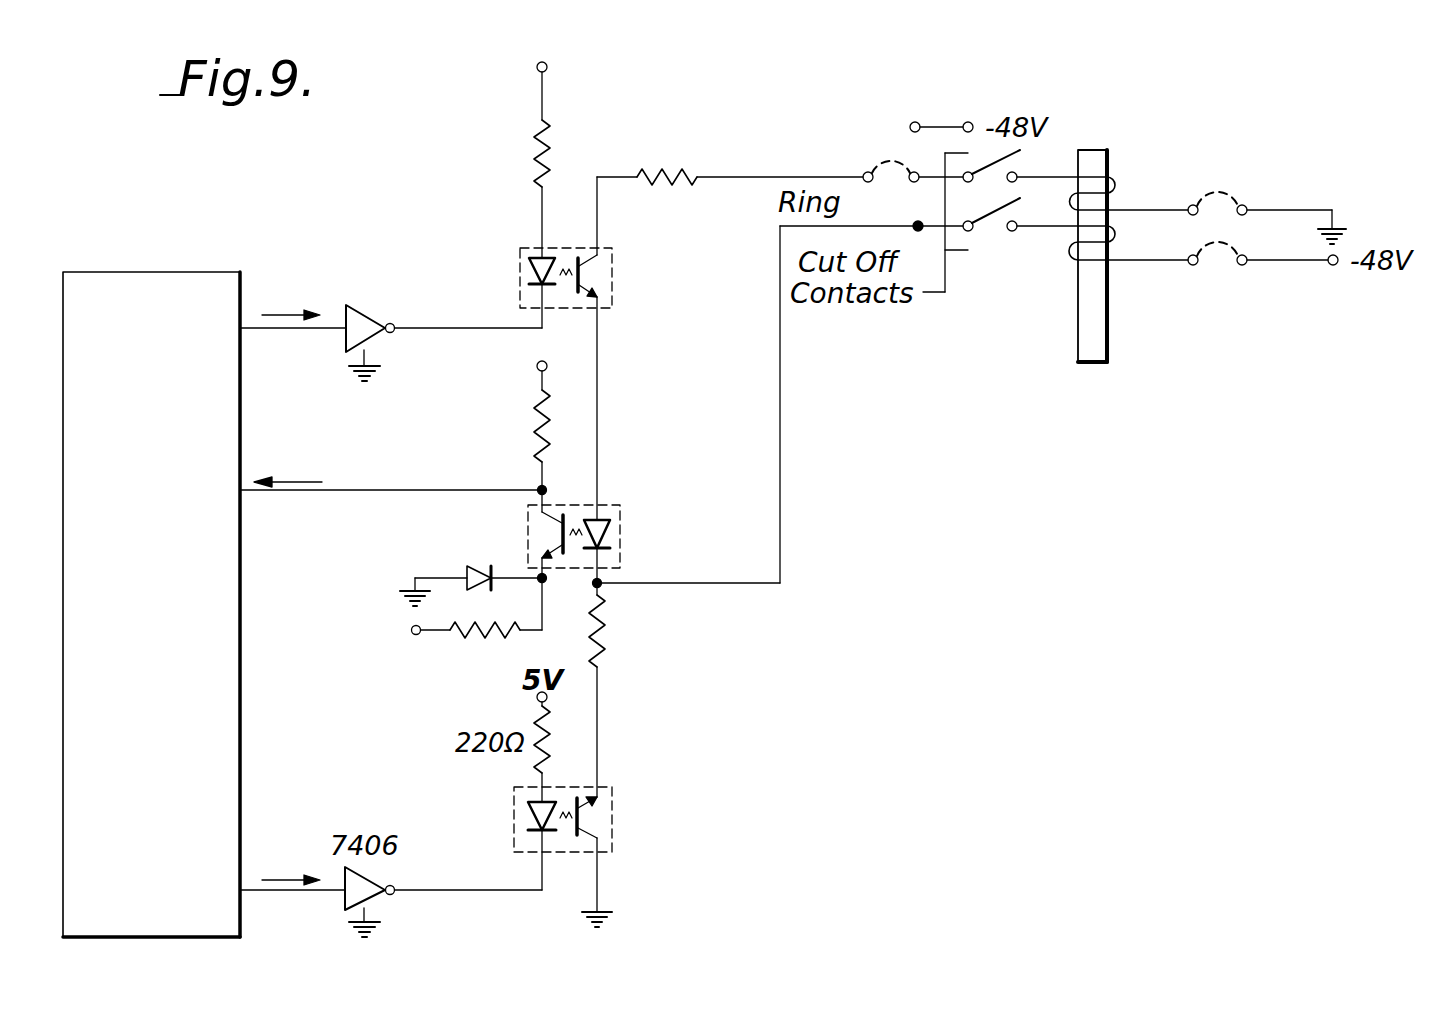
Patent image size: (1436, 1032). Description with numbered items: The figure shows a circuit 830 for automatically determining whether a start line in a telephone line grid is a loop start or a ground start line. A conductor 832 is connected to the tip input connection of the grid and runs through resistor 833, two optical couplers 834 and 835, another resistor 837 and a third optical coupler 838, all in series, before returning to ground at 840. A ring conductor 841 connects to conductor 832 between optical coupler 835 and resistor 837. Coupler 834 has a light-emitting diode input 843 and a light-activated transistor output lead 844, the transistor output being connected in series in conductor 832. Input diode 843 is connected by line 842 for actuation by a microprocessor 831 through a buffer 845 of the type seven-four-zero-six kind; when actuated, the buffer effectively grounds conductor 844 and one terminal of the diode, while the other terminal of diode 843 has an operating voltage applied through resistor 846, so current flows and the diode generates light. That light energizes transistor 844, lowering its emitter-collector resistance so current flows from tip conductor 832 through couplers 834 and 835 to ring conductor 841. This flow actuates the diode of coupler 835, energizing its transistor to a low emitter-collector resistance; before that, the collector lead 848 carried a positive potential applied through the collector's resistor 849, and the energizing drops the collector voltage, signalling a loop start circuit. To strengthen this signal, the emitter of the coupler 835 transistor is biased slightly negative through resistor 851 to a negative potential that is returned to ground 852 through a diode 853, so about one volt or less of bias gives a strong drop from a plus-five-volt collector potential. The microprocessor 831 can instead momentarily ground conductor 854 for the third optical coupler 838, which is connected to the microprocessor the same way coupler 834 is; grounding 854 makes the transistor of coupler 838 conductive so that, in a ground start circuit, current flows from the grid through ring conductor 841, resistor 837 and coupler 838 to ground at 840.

The circuit 830 is at (760, 604).
The microprocessor 831 is at (230, 252).
The conductor 832 is at (785, 132).
The resistor 833 is at (672, 182).
The optical coupler 834 is at (605, 305).
The optical coupler 835 is at (610, 514).
The resistor 837 is at (600, 657).
The optical coupler 838 is at (604, 852).
The ground 840 is at (597, 910).
The ring conductor 841 is at (780, 540).
The line 842 is at (417, 330).
The light-emitting diode input 843 is at (529, 272).
The light-activated transistor output lead 844 is at (570, 262).
The buffer 845 is at (352, 326).
The resistor 846 is at (535, 130).
The collector lead 848 is at (505, 492).
The collector's resistor 849 is at (538, 412).
The resistor 851 is at (462, 645).
The ground 852 is at (412, 585).
The diode 853 is at (478, 588).
The conductor 854 is at (530, 893).